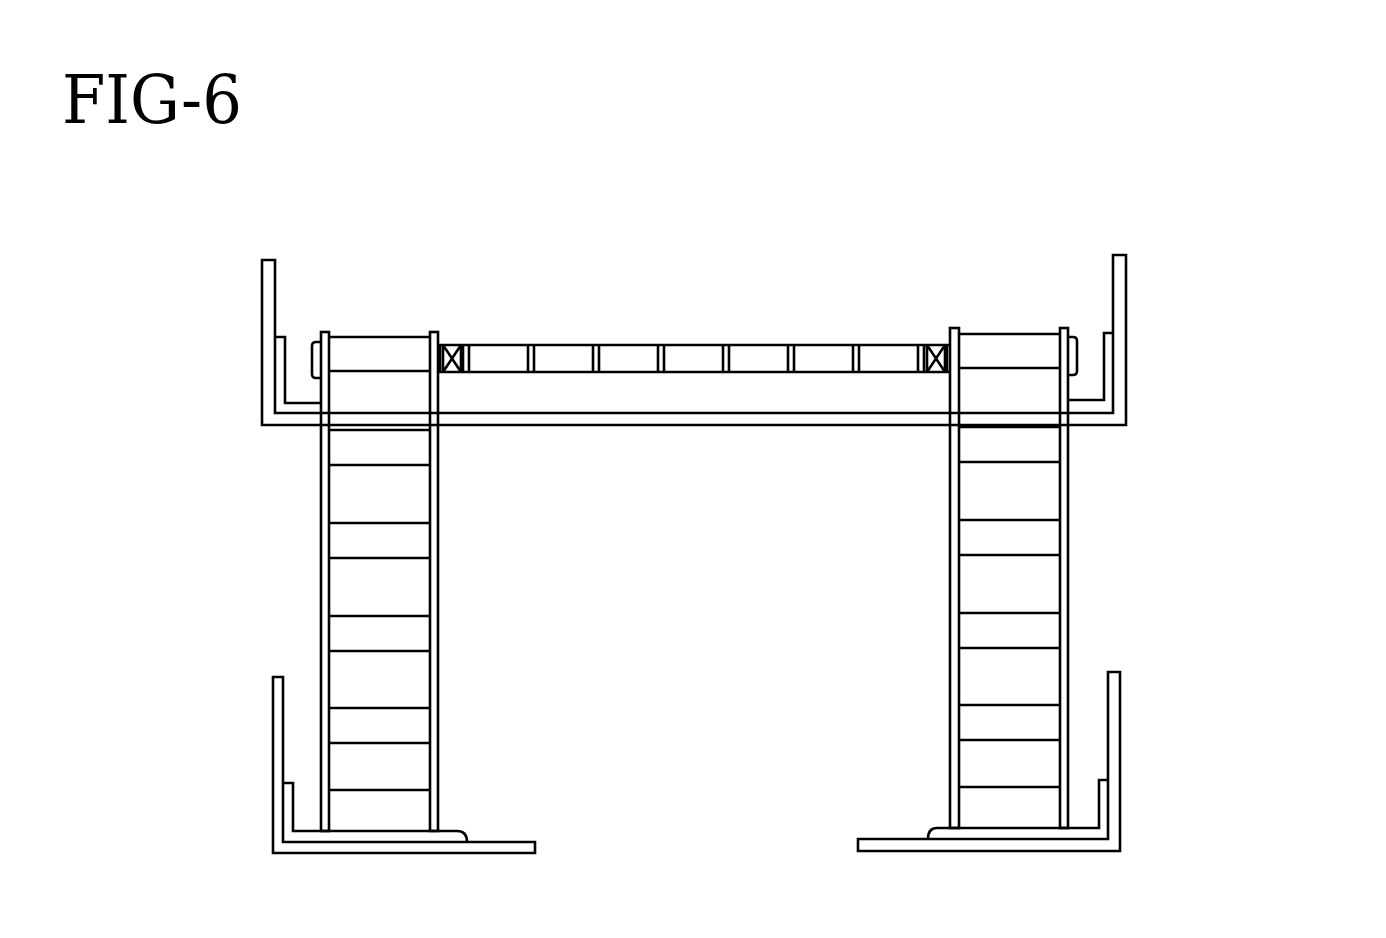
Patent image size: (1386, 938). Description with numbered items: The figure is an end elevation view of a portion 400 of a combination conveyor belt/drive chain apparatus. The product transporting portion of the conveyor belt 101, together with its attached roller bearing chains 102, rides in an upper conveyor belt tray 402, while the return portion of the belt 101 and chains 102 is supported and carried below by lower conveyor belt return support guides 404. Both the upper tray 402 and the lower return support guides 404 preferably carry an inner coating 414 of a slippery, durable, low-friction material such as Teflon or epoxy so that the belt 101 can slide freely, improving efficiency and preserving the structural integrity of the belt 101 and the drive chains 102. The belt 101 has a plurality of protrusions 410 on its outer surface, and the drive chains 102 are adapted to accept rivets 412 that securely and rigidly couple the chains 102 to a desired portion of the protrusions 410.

The portion of the combination conveyor belt/drive chain apparatus 400 is at (1286, 154).
The conveyor belt 101 is at (707, 343).
The roller bearing chains 102 is at (322, 590).
The upper conveyor belt tray 402 is at (1127, 313).
The lower conveyor belt return support guides 404 is at (272, 748).
The protrusions 410 is at (557, 347).
The rivets 412 is at (306, 345).
The inner coating 414 is at (1103, 333).